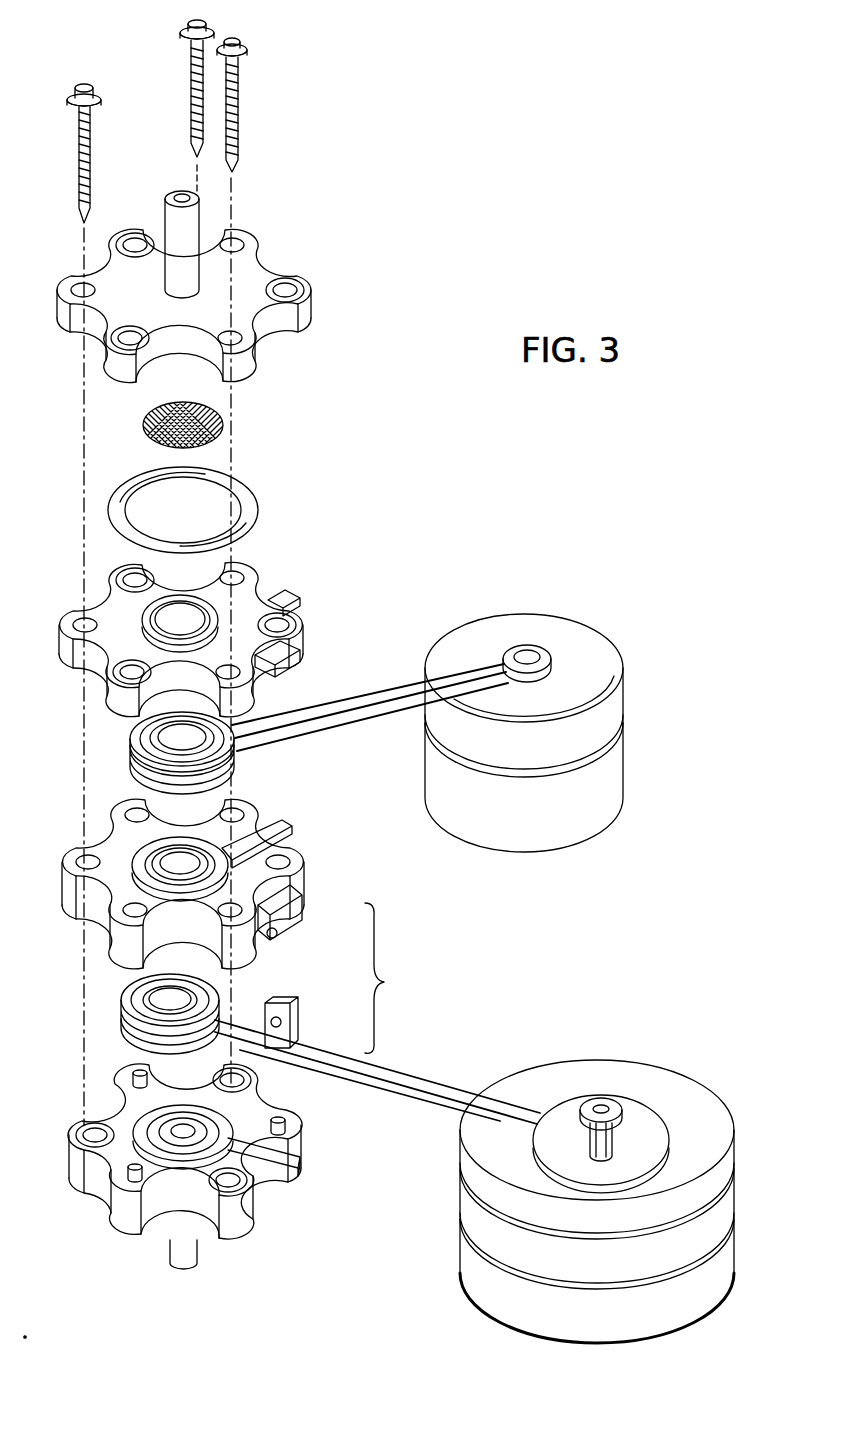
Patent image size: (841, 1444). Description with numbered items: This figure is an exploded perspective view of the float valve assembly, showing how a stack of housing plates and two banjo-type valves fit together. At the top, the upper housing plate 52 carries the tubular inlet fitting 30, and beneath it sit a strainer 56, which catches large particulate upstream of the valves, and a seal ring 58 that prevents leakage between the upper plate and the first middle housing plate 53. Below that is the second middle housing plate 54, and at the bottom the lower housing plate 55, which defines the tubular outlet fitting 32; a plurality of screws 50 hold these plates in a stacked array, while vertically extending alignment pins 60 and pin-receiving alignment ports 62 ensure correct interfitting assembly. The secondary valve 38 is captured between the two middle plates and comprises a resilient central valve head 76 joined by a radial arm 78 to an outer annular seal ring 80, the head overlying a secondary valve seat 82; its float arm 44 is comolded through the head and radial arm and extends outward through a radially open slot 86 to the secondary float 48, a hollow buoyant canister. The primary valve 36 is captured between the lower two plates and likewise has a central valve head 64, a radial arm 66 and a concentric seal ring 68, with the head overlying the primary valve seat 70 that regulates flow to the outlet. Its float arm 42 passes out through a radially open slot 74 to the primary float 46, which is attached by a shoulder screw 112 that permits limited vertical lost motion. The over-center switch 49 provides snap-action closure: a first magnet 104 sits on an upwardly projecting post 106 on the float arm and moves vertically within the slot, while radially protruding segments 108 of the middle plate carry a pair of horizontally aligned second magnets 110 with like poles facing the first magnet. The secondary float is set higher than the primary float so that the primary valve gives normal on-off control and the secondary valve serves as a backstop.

The inlet fitting 30 is at (190, 228).
The outlet fitting 32 is at (178, 1249).
The primary valve 36 is at (181, 1001).
The secondary valve 38 is at (170, 738).
The float arm 42 is at (377, 1060).
The float arm 44 is at (478, 660).
The primary float 46 is at (611, 1178).
The secondary float 48 is at (615, 773).
The over-center switch 49 is at (393, 978).
The screws 50 is at (233, 112).
The upper housing plate 52 is at (66, 306).
The middle housing plate 53 is at (108, 600).
The middle housing plate 54 is at (201, 894).
The lower housing plate 55 is at (175, 1147).
The strainer 56 is at (222, 425).
The seal ring 58 is at (246, 512).
The alignment pins 60 is at (133, 1074).
The alignment ports 62 is at (234, 578).
The valve head 64 is at (167, 1003).
The radial arm 66 is at (207, 1013).
The seal ring 68 is at (130, 1007).
The primary valve seat 70 is at (168, 1140).
The slot 74 is at (301, 938).
The valve head 76 is at (178, 742).
The radial arm 78 is at (252, 712).
The seal ring 80 is at (220, 760).
The secondary valve seat 82 is at (147, 865).
The slot 86 is at (301, 604).
The first magnet 104 is at (278, 1028).
The post 106 is at (300, 1021).
The protruding segments 108 is at (299, 898).
The second magnets 110 is at (272, 940).
The shoulder screw 112 is at (607, 1085).